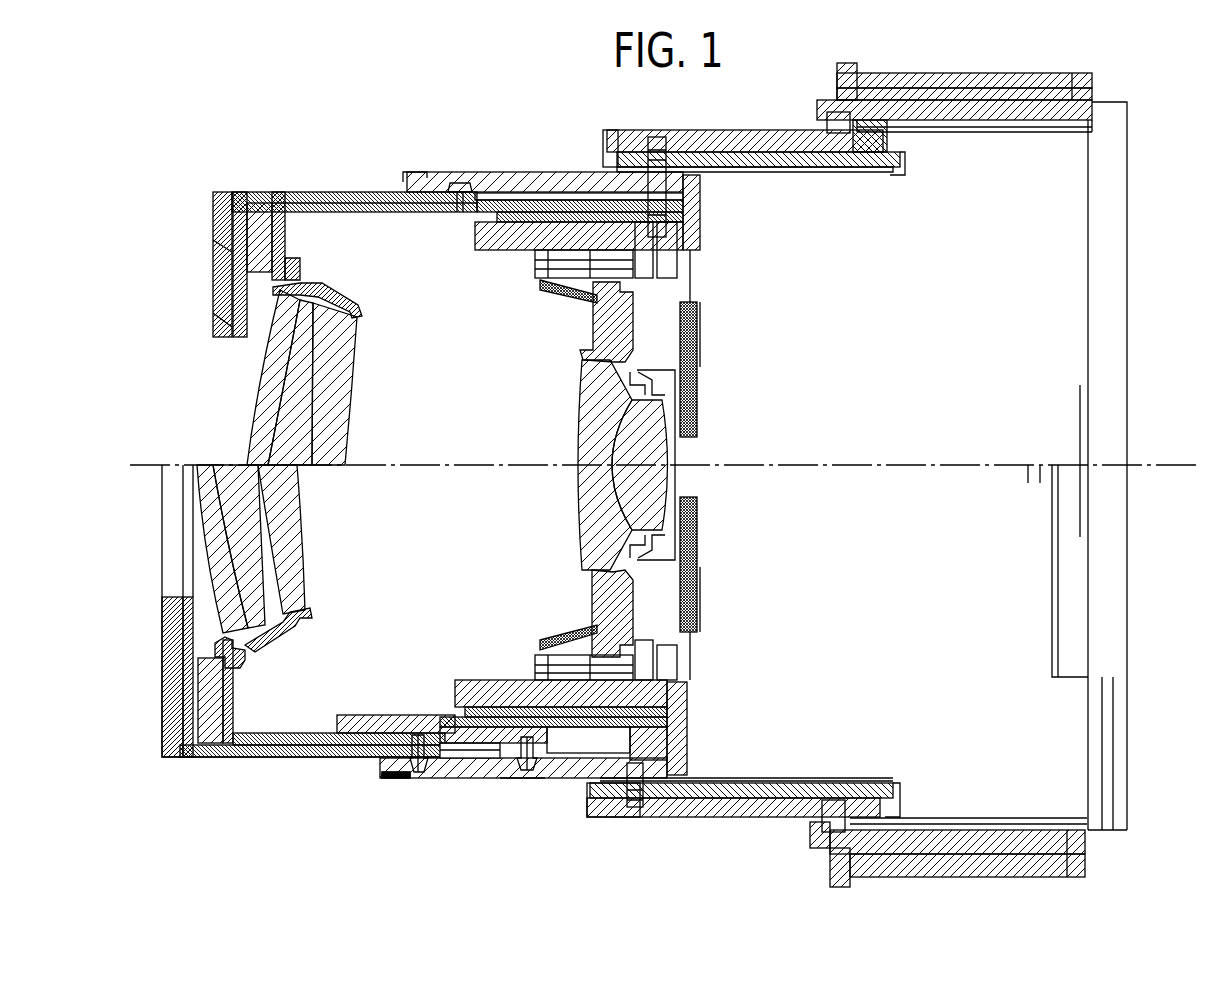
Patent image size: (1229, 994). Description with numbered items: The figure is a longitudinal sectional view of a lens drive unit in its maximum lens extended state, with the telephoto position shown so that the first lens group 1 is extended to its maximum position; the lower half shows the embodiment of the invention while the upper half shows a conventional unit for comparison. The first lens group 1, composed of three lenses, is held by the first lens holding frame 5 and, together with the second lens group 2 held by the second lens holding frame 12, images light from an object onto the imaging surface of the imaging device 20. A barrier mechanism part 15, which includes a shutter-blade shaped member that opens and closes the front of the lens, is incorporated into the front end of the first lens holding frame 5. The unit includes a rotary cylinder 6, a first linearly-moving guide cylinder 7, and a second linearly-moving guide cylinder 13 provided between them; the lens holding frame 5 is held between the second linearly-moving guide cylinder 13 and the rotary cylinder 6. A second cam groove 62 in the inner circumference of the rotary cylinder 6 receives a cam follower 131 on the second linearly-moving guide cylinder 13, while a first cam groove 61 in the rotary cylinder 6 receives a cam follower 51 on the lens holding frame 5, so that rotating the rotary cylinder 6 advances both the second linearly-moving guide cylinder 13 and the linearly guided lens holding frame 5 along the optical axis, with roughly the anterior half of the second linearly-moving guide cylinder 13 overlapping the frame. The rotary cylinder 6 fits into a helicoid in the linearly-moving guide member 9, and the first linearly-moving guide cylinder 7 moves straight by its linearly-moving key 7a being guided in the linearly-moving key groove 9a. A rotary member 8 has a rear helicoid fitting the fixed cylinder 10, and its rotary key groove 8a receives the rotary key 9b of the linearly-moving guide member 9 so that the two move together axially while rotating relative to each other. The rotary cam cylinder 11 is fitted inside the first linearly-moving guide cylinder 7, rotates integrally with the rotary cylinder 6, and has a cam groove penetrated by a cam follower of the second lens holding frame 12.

The first lens group 1 is at (290, 400).
The second lens group 2 is at (590, 485).
The first lens holding frame 5 is at (320, 194).
The rotary cylinder 6 is at (525, 180).
The first linearly-moving guide cylinder 7 is at (500, 227).
The linearly-moving key 7a is at (684, 775).
The rotary member 8 is at (735, 140).
The rotary key groove 8a is at (635, 810).
The linearly-moving guide member 9 is at (900, 158).
The linearly-moving key groove 9a is at (835, 172).
The rotary key 9b is at (655, 135).
The fixed cylinder 10 is at (1012, 105).
The rotary cam cylinder 11 is at (503, 250).
The second lens holding frame 12 is at (600, 605).
The second linearly-moving guide cylinder 13 is at (372, 715).
The barrier mechanism part 15 is at (265, 350).
The imaging device 20 is at (1080, 390).
The cam follower 51 is at (418, 772).
The first cam groove 61 is at (385, 775).
The second cam groove 62 is at (530, 771).
The cam follower 131 is at (515, 760).